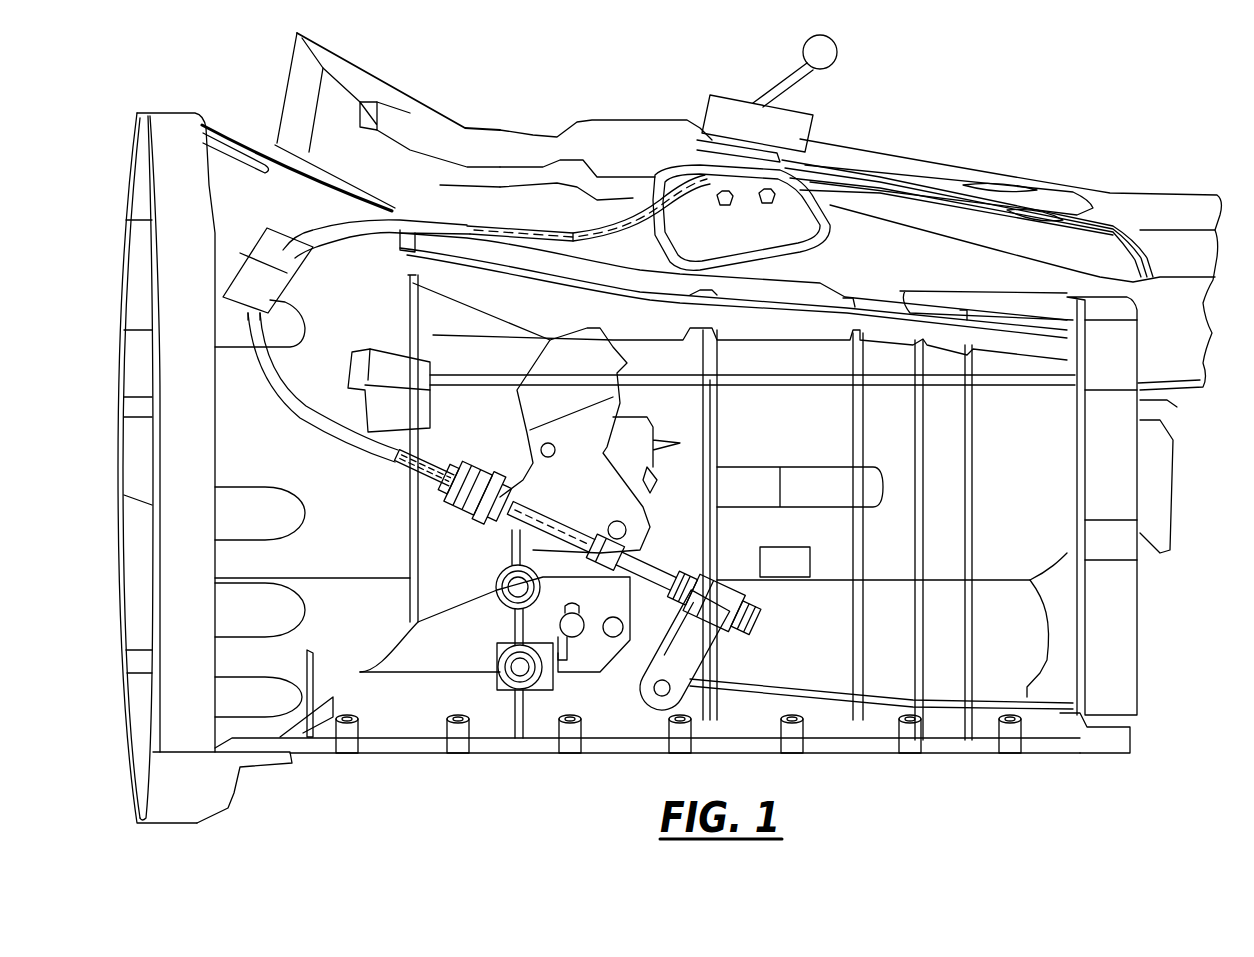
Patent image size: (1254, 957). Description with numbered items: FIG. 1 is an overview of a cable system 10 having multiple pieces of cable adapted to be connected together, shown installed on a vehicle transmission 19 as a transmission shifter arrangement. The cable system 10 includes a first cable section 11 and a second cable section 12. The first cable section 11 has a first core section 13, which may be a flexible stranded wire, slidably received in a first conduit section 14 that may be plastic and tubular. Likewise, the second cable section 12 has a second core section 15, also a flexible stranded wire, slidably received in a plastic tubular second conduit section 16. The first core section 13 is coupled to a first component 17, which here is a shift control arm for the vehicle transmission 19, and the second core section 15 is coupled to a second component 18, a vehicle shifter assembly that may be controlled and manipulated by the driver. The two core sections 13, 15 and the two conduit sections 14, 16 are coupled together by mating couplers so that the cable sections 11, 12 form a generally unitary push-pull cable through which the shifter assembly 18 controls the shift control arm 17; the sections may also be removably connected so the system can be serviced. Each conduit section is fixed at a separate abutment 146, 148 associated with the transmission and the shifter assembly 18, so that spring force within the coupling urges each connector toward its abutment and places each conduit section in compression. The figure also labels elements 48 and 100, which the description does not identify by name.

The cable system 10 is at (228, 185).
The first cable section 11 is at (349, 459).
The second cable section 12 is at (465, 222).
The first core section 13 is at (435, 487).
The first conduit section 14 is at (397, 463).
The second core section 15 is at (527, 225).
The second conduit section 16 is at (403, 217).
The first component 17 is at (690, 663).
The second component 18 is at (757, 98).
The vehicle transmission 19 is at (350, 748).
The cable bracket 48 is at (281, 294).
The cable clamp 100 is at (303, 253).
The abutment 146 is at (693, 143).
The abutment 148 is at (527, 468).